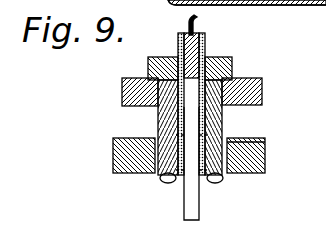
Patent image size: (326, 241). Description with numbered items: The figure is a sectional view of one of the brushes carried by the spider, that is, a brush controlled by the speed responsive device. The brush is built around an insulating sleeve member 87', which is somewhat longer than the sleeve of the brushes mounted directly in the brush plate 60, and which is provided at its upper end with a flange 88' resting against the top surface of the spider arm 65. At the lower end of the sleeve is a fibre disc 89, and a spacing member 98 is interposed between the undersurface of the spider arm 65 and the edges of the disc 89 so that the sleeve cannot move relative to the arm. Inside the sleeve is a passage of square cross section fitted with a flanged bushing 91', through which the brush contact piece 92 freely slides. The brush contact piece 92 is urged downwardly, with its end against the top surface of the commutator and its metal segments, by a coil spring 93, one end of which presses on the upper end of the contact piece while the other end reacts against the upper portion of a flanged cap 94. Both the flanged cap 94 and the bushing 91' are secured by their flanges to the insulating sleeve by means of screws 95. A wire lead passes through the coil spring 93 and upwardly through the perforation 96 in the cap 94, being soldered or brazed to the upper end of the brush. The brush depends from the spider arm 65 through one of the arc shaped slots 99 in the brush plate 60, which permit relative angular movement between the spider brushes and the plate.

The brush plate 60 is at (265, 160).
The arm of the spider 65 is at (262, 86).
The sleeve member 87' is at (237, 127).
The flange 88' is at (229, 104).
The fibre disc 89 is at (226, 180).
The flanged bushing 91' is at (141, 127).
The brush contact piece 92 is at (203, 209).
The coil spring 93 is at (222, 53).
The flanged cap 94 is at (205, 44).
The screws 95 is at (165, 58).
The perforation 96 is at (198, 30).
The spacing member 98 is at (265, 142).
The arc shaped slots 99 is at (147, 173).